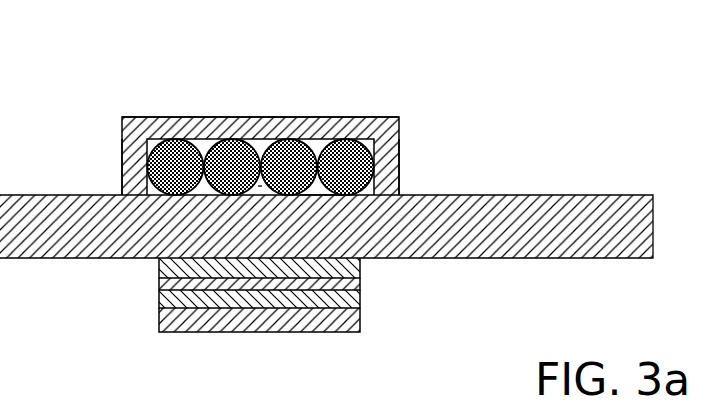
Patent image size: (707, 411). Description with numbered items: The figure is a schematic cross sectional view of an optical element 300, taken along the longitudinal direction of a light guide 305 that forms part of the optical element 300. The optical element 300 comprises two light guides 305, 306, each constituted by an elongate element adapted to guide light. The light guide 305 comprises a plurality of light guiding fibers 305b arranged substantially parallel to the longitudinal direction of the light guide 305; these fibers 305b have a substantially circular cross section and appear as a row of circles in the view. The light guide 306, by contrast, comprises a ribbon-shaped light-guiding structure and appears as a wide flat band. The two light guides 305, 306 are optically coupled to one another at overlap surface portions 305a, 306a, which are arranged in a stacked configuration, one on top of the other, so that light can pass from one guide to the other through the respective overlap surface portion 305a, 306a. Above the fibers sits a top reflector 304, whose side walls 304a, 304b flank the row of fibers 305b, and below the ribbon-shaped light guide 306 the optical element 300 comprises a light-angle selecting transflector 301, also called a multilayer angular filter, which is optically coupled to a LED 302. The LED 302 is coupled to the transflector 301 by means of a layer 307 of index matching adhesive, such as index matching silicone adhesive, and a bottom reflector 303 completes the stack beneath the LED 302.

The optical element 300 is at (407, 100).
The light-angle selecting transflector 301 is at (362, 265).
The LED 302 is at (362, 300).
The bottom reflector 303 is at (195, 332).
The top reflector 304 is at (133, 114).
The first cap side wall 304a is at (122, 140).
The second cap side wall 304b is at (399, 166).
The light guide 305 is at (207, 141).
The overlap surface portion 305a is at (260, 190).
The light guiding fibers 305b is at (310, 140).
The light guide 306 is at (560, 195).
The overlap surface portion 306a is at (322, 200).
The layer of index matching adhesive 307 is at (362, 282).